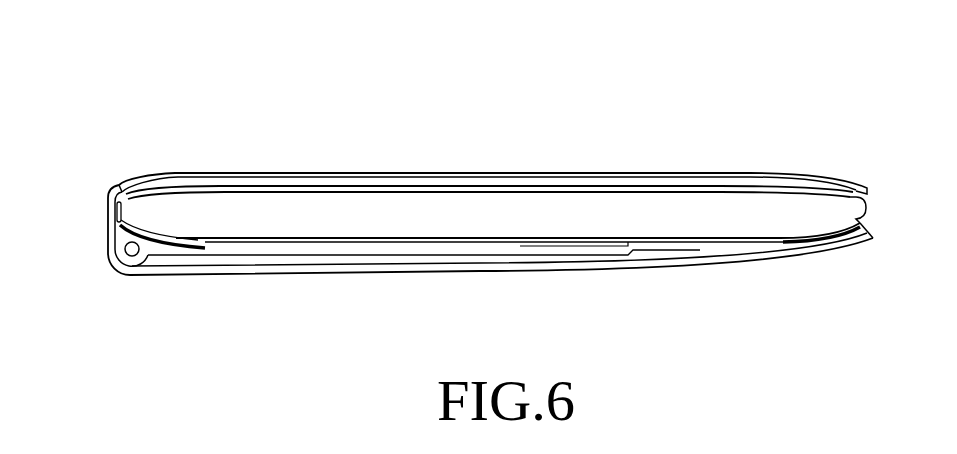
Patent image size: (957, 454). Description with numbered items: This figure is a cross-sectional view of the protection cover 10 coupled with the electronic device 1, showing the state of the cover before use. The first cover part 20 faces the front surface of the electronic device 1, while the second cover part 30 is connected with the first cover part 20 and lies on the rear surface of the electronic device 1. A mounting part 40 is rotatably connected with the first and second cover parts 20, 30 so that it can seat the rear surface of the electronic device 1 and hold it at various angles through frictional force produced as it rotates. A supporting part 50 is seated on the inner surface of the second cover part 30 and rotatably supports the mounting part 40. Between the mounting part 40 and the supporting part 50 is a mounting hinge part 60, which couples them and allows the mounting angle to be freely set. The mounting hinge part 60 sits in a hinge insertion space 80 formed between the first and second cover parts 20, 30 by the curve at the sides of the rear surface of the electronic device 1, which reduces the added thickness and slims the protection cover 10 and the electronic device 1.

The protection cover 10 is at (164, 99).
The electronic device 1 is at (568, 217).
The first cover part 20 is at (440, 173).
The second cover part 30 is at (807, 255).
The mounting part 40 is at (488, 250).
The supporting part 50 is at (588, 261).
The mounting hinge part 60 is at (127, 251).
The hinge insertion space 80 is at (120, 231).